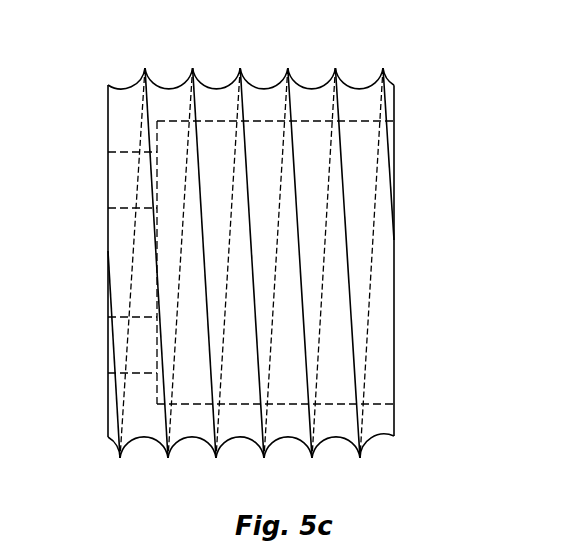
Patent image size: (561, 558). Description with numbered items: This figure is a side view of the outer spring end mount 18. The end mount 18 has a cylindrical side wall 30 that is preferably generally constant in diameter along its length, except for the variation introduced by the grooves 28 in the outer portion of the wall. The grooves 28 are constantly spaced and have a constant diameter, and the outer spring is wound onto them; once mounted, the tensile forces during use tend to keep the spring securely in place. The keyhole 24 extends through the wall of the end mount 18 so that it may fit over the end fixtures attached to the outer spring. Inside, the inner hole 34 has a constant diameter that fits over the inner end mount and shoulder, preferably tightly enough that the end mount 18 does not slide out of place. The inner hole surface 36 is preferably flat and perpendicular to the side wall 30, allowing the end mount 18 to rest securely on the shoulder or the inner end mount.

The end mount 18 is at (442, 425).
The keyhole 24 is at (125, 208).
The grooves 28 is at (312, 150).
The cylindrical side wall 30 is at (200, 147).
The inner hole 34 is at (330, 404).
The inner hole surface 36 is at (157, 388).